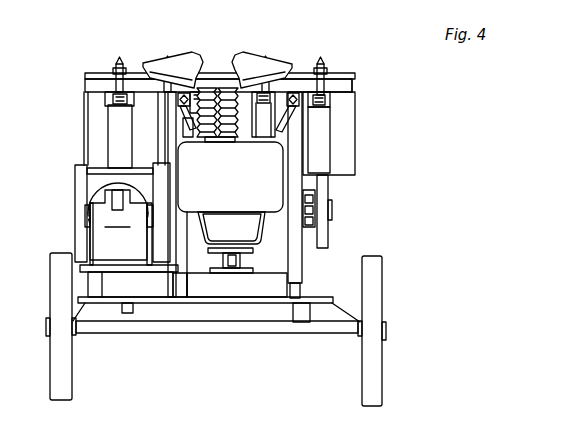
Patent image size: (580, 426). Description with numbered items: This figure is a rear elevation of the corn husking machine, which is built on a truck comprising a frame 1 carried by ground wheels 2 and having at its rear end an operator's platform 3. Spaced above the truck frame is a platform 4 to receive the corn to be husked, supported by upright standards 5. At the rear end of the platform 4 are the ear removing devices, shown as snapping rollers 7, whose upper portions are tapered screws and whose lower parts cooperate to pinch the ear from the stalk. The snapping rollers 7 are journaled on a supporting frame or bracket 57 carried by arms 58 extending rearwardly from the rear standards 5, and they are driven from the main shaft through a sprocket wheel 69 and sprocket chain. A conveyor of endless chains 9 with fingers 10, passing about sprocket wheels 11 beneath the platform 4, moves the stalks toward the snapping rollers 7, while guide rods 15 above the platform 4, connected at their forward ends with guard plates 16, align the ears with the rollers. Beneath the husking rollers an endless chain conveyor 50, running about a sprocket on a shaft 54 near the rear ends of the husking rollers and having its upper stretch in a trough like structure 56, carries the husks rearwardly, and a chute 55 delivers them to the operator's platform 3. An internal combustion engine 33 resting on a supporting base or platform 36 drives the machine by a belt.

The frame 1 is at (93, 286).
The ground wheels 2 is at (375, 377).
The operator's platform 3 is at (300, 290).
The platform 4 is at (85, 74).
The upright standards 5 is at (183, 225).
The snapping rollers 7 is at (215, 143).
The endless chains 9 is at (108, 105).
The fingers 10 is at (117, 66).
The sprocket wheels 11 is at (124, 66).
The rods 15 is at (175, 55).
The guard plates 16 is at (232, 78).
The internal combustion engine 33 is at (100, 240).
The supporting base or platform 36 is at (128, 273).
The endless chain conveyor 50 is at (240, 258).
The shaft 54 is at (240, 285).
The chute 55 is at (197, 281).
The trough like structure 56 is at (255, 228).
The supporting frame or bracket 57 is at (258, 138).
The arms 58 is at (185, 113).
The sprocket wheel 69 is at (332, 212).